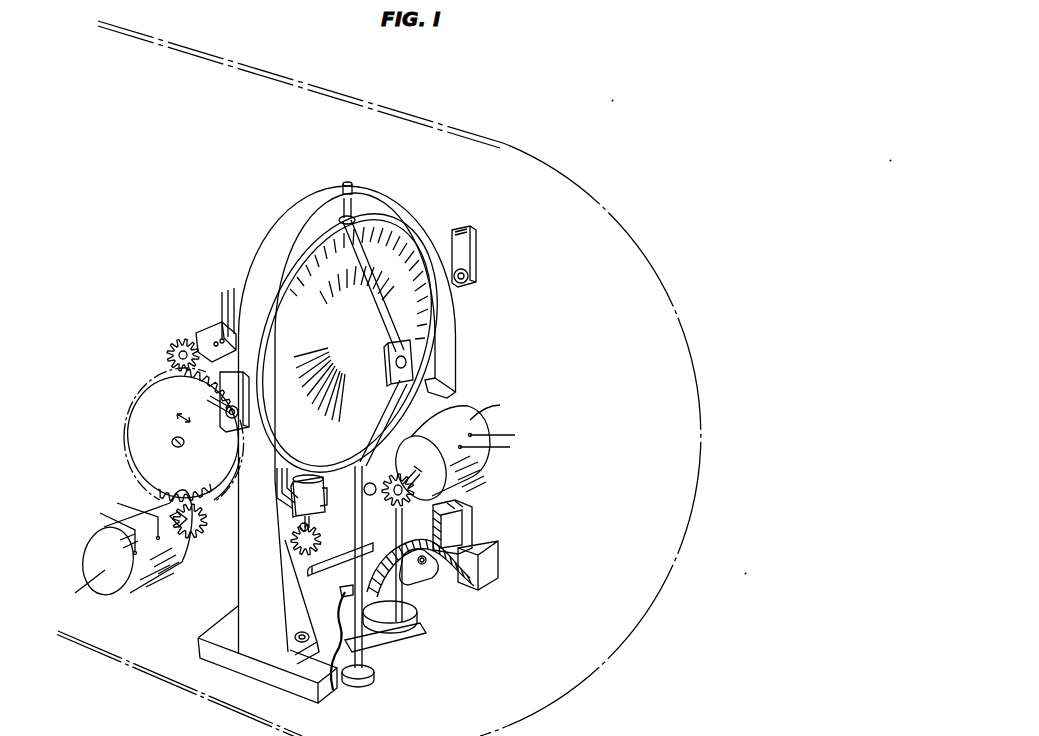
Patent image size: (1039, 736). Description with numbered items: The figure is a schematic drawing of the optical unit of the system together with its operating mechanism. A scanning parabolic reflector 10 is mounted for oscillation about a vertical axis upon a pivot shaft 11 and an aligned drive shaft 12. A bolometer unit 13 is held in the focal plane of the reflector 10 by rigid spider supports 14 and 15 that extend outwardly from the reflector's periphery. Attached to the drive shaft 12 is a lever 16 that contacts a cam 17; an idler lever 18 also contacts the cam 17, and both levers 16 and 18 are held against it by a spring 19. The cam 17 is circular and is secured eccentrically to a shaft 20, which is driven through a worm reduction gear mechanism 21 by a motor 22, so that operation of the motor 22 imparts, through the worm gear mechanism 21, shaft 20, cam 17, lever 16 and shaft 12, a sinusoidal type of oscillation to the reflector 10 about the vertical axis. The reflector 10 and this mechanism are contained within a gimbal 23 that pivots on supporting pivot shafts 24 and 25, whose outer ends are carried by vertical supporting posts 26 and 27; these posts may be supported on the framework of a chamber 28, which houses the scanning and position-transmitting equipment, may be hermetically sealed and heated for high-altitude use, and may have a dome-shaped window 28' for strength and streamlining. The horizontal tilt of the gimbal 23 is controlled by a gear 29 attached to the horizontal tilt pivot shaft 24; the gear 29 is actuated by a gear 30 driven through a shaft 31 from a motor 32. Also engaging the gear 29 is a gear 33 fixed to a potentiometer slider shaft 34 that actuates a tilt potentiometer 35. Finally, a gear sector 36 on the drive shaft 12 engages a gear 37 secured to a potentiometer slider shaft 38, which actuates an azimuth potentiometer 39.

The scanning parabolic reflector 10 is at (332, 338).
The pivot shaft 11 is at (343, 186).
The drive shaft 12 is at (352, 586).
The bolometer unit 13 is at (388, 362).
The spider support 14 is at (376, 420).
The spider support 15 is at (368, 292).
The lever 16 is at (385, 648).
The cam 17 is at (410, 612).
The idler lever 18 is at (428, 588).
The spring 19 is at (418, 626).
The shaft 20 is at (430, 507).
The worm reduction gear mechanism 21 is at (392, 481).
The motor 22 is at (470, 466).
The gimbal 23 is at (420, 212).
The horizontal tilt pivot shaft 24 is at (228, 414).
The supporting pivot shaft 25 is at (466, 284).
The vertical supporting post 26 is at (237, 378).
The vertical supporting post 27 is at (478, 250).
The chamber 28 is at (286, 378).
The window 28' is at (602, 439).
The gear 29 is at (124, 442).
The gear 30 is at (199, 524).
The shaft 31 is at (170, 510).
The motor 32 is at (150, 567).
The gear 33 is at (175, 347).
The potentiometer slider shaft 34 is at (178, 357).
The tilt potentiometer 35 is at (207, 326).
The gear sector 36 is at (318, 568).
The gear 37 is at (302, 548).
The potentiometer slider shaft 38 is at (304, 521).
The azimuth potentiometer 39 is at (327, 506).